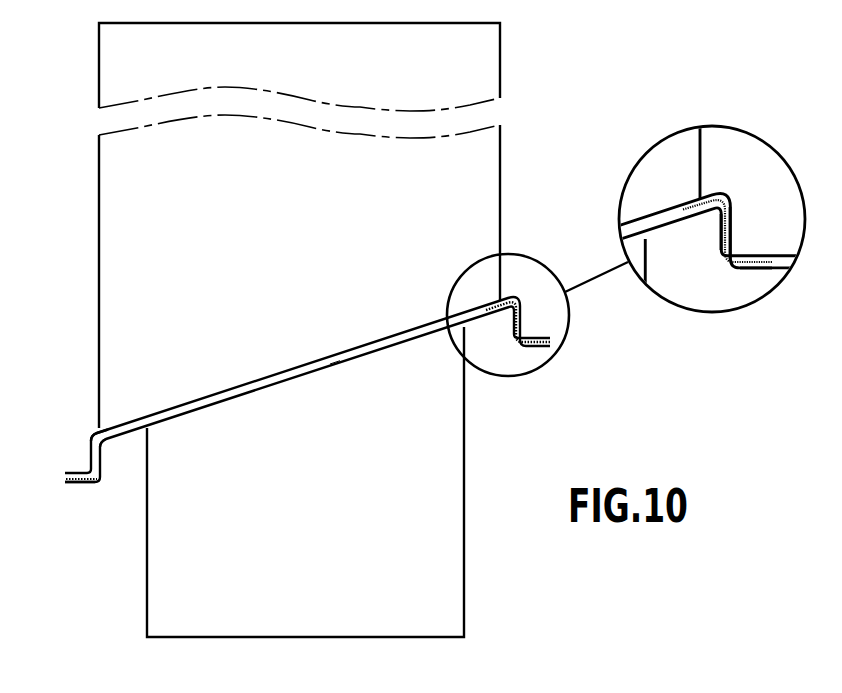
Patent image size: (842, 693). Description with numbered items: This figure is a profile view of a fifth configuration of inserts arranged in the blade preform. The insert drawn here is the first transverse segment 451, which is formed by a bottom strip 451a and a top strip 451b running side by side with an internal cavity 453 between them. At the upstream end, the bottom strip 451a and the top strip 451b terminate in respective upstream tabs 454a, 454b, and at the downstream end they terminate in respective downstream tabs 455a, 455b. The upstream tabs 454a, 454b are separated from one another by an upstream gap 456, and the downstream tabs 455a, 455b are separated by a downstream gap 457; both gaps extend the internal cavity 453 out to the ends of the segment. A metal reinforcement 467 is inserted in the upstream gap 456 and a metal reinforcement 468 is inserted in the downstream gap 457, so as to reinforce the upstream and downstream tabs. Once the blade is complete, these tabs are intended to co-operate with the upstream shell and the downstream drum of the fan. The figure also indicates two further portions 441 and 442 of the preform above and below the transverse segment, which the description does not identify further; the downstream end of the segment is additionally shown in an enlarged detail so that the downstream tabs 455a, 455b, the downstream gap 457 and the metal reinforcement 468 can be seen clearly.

The lower body portion 441 is at (313, 576).
The upper body portion 442 is at (298, 216).
The first transverse segment 451 is at (280, 418).
The bottom strip 451a is at (275, 386).
The top strip 451b is at (252, 379).
The internal cavity 453 is at (332, 361).
The upstream tab 454a is at (78, 484).
The upstream tab 454b is at (88, 466).
The downstream tab 455a is at (749, 273).
The downstream tab 455b is at (745, 254).
The upstream gap 456 is at (64, 476).
The downstream gap 457 is at (726, 206).
The metal reinforcement 467 is at (101, 451).
The metal reinforcement 468 is at (715, 228).